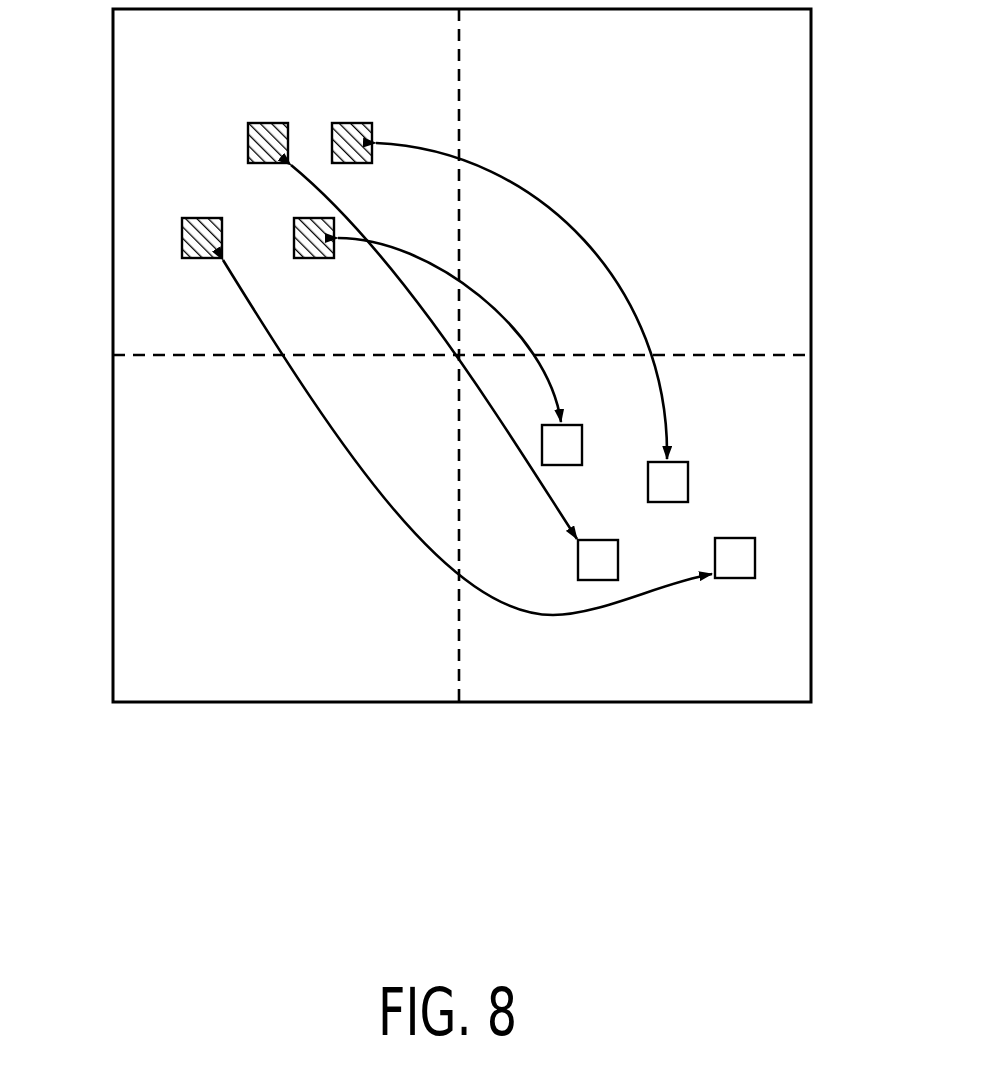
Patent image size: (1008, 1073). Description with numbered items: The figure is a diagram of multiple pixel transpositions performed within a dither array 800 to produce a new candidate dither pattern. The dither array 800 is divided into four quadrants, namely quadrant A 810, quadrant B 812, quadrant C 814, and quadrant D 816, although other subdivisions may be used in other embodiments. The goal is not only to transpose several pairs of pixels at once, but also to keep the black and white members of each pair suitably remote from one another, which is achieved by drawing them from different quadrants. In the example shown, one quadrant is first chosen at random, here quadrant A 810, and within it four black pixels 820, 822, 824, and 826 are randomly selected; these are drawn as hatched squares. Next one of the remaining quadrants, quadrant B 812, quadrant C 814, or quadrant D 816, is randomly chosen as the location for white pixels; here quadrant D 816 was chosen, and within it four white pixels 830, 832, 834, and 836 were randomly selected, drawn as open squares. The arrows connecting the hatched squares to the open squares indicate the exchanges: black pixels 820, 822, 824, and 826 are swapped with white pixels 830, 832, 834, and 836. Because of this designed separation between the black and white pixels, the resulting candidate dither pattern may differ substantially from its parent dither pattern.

The dither array 800 is at (225, 703).
The quadrant A 810 is at (113, 312).
The quadrant B 812 is at (811, 307).
The quadrant C 814 is at (114, 655).
The quadrant D 816 is at (812, 652).
The black pixel 820 is at (262, 121).
The black pixel 822 is at (355, 121).
The black pixel 824 is at (198, 216).
The black pixel 826 is at (310, 259).
The white pixel 830 is at (597, 540).
The white pixel 832 is at (682, 462).
The white pixel 834 is at (730, 578).
The white pixel 836 is at (577, 424).